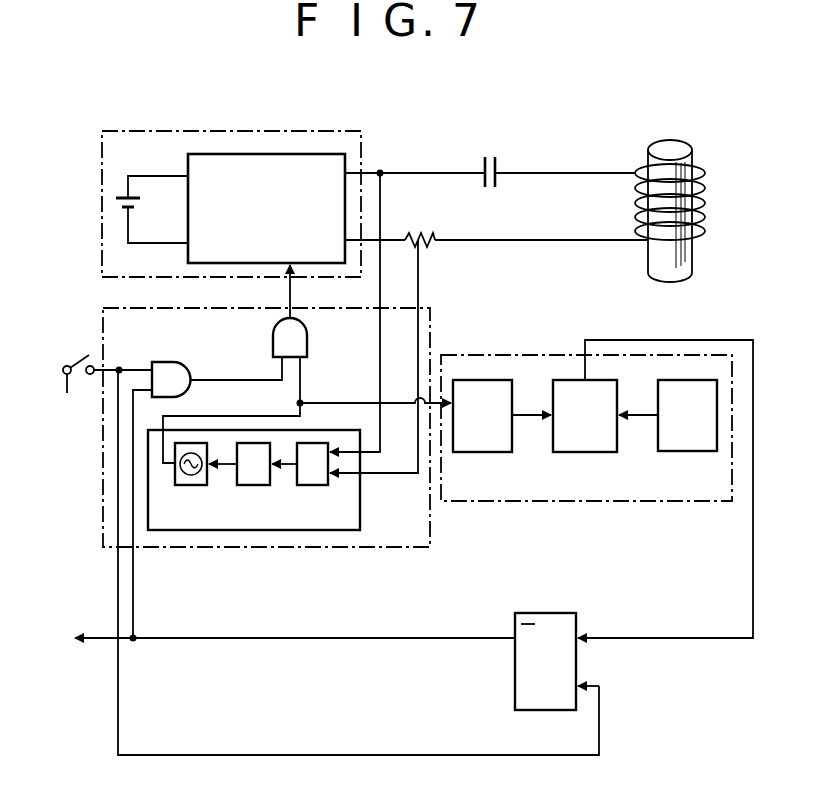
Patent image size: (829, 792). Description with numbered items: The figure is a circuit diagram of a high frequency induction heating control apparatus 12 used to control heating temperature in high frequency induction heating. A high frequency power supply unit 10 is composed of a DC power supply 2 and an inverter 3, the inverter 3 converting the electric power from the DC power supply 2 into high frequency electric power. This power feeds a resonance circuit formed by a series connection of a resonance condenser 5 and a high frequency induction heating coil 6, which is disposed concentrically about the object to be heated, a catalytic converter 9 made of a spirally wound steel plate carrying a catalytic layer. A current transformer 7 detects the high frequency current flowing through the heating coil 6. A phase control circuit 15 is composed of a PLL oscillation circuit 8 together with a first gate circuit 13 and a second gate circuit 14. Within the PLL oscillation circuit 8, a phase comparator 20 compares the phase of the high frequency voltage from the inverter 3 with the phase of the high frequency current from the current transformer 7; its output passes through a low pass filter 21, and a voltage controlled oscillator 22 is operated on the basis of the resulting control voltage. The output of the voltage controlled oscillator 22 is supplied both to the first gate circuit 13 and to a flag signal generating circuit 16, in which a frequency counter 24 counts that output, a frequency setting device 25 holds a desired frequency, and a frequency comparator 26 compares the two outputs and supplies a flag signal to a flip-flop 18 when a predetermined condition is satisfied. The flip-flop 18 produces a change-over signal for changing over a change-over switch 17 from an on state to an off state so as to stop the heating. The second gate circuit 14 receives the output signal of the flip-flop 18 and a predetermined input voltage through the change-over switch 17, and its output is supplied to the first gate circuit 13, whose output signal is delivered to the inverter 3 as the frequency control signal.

The DC power supply 2 is at (118, 196).
The inverter 3 is at (288, 154).
The resonance condenser 5 is at (497, 162).
The high frequency induction heating coil 6 is at (702, 210).
The current transformer 7 is at (430, 246).
The PLL oscillation circuit 8 is at (341, 547).
The catalytic converter 9 is at (665, 146).
The high frequency power supply unit 10 is at (170, 128).
The high frequency induction heating control apparatus 12 is at (560, 126).
The first gate circuit 13 is at (308, 330).
The second gate circuit 14 is at (164, 362).
The phase control circuit 15 is at (431, 518).
The flag signal generating circuit 16 is at (656, 503).
The change-over switch 17 is at (82, 358).
The flip-flop 18 is at (515, 686).
The phase comparator 20 is at (313, 486).
The low pass filter 21 is at (254, 486).
The voltage controlled oscillator 22 is at (189, 486).
The frequency counter 24 is at (467, 455).
The frequency setting device 25 is at (690, 454).
The frequency comparator 26 is at (575, 455).